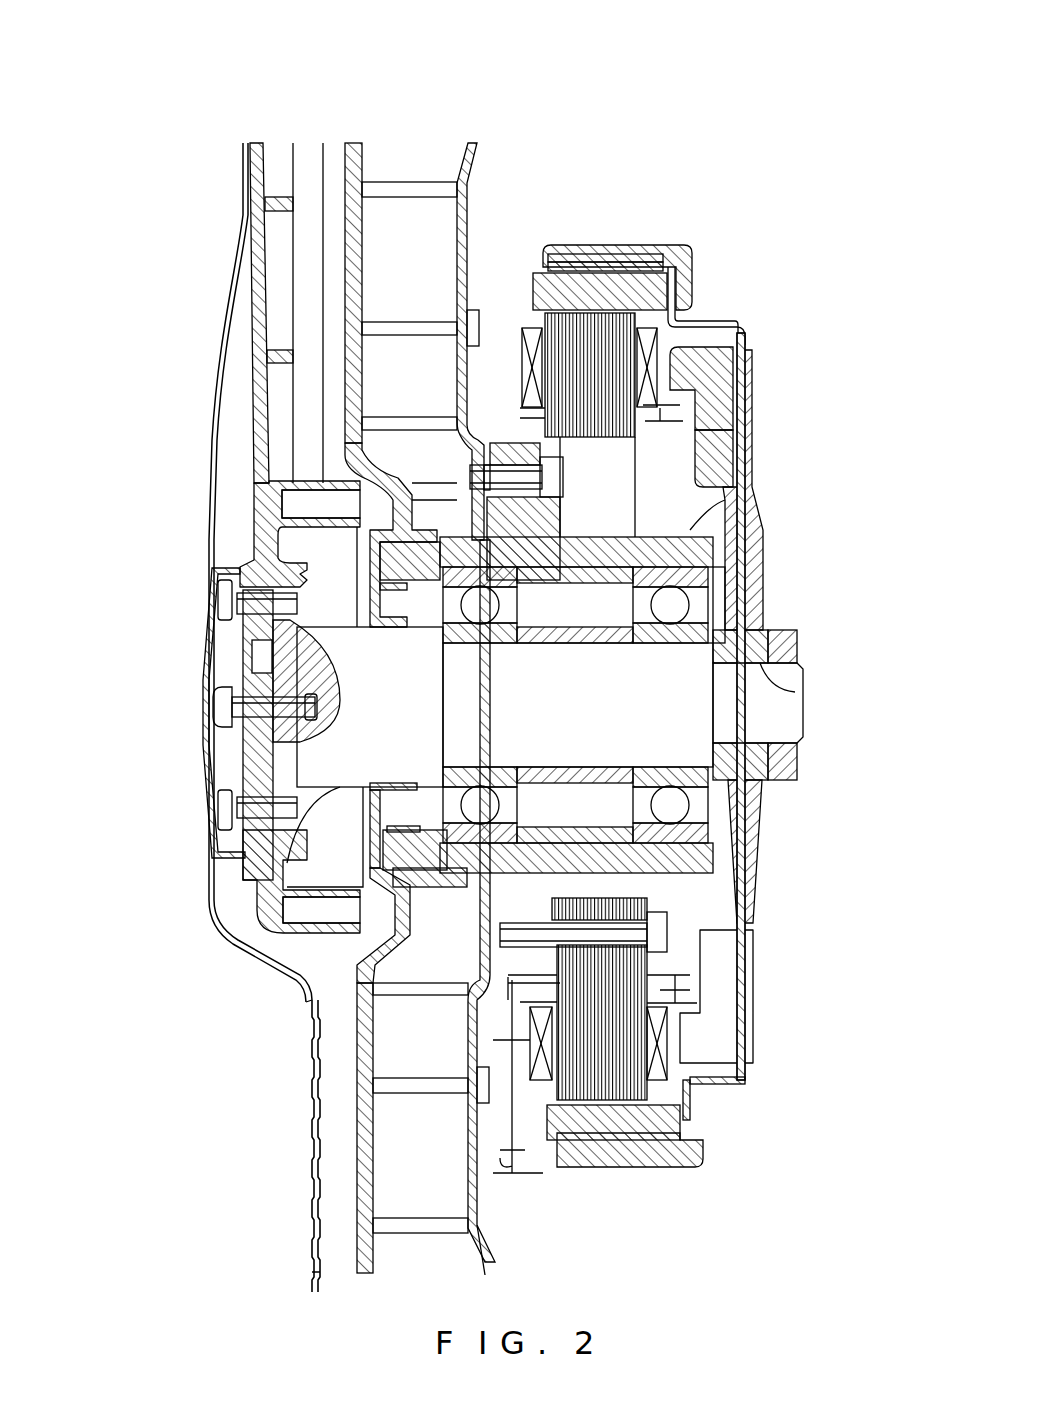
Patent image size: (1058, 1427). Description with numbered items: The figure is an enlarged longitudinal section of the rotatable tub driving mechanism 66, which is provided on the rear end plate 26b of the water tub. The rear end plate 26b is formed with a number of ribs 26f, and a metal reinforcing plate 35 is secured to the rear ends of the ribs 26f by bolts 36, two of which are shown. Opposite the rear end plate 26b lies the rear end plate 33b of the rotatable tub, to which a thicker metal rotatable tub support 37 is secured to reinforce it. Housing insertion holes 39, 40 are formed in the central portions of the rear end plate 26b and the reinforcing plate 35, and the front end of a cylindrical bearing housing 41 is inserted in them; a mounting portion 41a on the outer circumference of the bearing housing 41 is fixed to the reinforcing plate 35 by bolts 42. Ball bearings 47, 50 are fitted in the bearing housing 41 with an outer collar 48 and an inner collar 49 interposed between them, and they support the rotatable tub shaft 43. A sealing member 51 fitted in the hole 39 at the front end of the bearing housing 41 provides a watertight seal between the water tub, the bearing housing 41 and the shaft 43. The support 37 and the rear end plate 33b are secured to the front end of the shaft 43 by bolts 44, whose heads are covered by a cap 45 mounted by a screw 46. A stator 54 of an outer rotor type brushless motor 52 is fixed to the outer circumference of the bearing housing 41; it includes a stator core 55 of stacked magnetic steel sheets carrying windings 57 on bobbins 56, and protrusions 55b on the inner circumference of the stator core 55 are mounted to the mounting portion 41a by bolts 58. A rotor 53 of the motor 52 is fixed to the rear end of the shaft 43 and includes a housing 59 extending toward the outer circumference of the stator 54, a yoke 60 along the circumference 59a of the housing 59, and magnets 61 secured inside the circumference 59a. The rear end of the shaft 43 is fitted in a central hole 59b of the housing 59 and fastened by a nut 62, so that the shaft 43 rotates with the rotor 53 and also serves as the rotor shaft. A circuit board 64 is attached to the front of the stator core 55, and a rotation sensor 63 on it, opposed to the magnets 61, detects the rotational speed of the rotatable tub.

The rear end plate 33b is at (247, 150).
The rotatable tub support 37 is at (262, 162).
The rear end plate 26b is at (362, 160).
The ribs 26f is at (415, 183).
The reinforcing plate 35 is at (470, 175).
The bolts 36 is at (480, 310).
The housing insertion hole 40 is at (438, 532).
The mounting portion 41a is at (515, 440).
The bolts 42 is at (563, 478).
The rotor 53 is at (700, 285).
The yoke 60 is at (645, 258).
The magnets 61 is at (600, 262).
The stator core 55 is at (575, 330).
The protrusions 55b is at (645, 905).
The bolts 58 is at (668, 935).
The stator 54 is at (700, 325).
The housing 59 is at (745, 452).
The circumference 59a is at (687, 232).
The brushless motor 52 is at (696, 228).
The rotatable tub driving mechanism 66 is at (732, 246).
The windings 57 is at (720, 370).
The bobbins 56 is at (700, 383).
The bearing housing 41 is at (695, 525).
The ball bearing 50 is at (712, 605).
The nut 62 is at (790, 645).
The hole 59b is at (803, 690).
The ball bearing 47 is at (425, 630).
The outer collar 48 is at (550, 643).
The inner collar 49 is at (600, 643).
The housing insertion hole 39 is at (372, 548).
The sealing member 51 is at (375, 602).
The rotatable tub shaft 43 is at (290, 875).
The bolts 44 is at (235, 600).
The cap 45 is at (205, 665).
The screw 46 is at (213, 707).
The circuit board 64 is at (470, 1130).
The rotation sensor 63 is at (548, 1150).